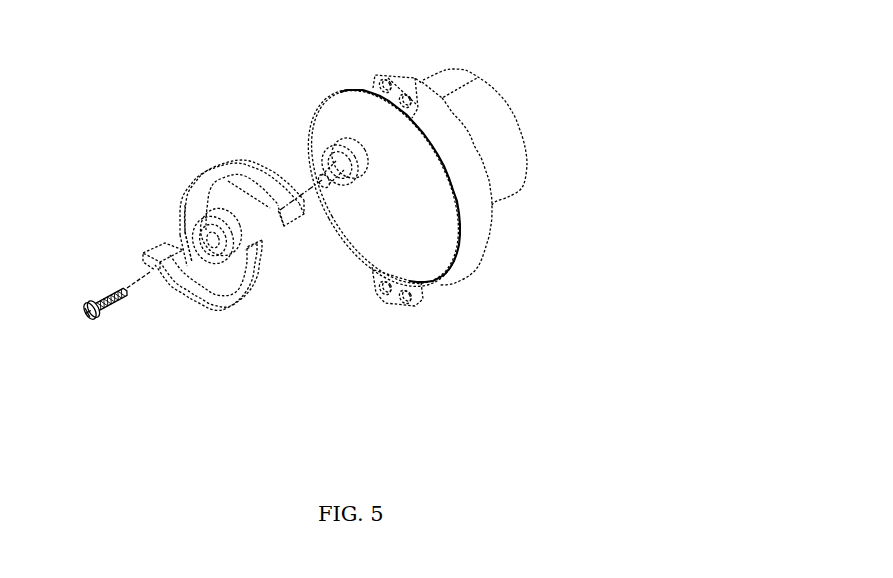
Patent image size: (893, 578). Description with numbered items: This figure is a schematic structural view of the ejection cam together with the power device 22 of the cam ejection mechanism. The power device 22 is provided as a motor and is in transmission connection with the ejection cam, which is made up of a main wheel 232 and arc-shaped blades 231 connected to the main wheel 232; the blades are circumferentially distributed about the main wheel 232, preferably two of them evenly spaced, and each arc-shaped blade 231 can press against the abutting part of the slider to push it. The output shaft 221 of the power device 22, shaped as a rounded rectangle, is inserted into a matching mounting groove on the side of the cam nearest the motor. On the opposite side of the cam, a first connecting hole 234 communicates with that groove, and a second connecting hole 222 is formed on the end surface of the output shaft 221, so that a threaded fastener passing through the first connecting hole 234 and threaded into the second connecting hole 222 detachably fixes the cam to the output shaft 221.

The power device 22 is at (412, 176).
The output shaft 221 is at (368, 200).
The second connecting hole 222 is at (328, 182).
The arc-shaped blade 231 is at (227, 214).
The main wheel 232 is at (190, 215).
The first connecting hole 234 is at (230, 244).